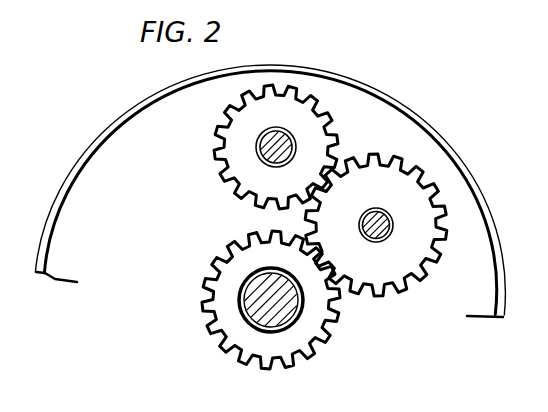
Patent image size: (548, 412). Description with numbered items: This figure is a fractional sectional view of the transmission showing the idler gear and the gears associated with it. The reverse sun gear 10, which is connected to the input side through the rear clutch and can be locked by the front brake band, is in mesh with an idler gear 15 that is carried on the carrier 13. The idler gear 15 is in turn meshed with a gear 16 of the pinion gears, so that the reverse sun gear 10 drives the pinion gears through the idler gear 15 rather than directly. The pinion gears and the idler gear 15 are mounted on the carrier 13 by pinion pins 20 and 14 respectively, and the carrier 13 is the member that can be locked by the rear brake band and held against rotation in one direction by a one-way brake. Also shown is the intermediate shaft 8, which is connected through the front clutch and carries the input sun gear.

The intermediate shaft 8 is at (257, 294).
The reverse sun gear 10 is at (256, 300).
The carrier 13 is at (371, 84).
The pinion pin 14 is at (391, 236).
The idler gear 15 is at (376, 241).
The gear of the pinion gears 16 is at (255, 147).
The pinion pin 20 is at (257, 139).